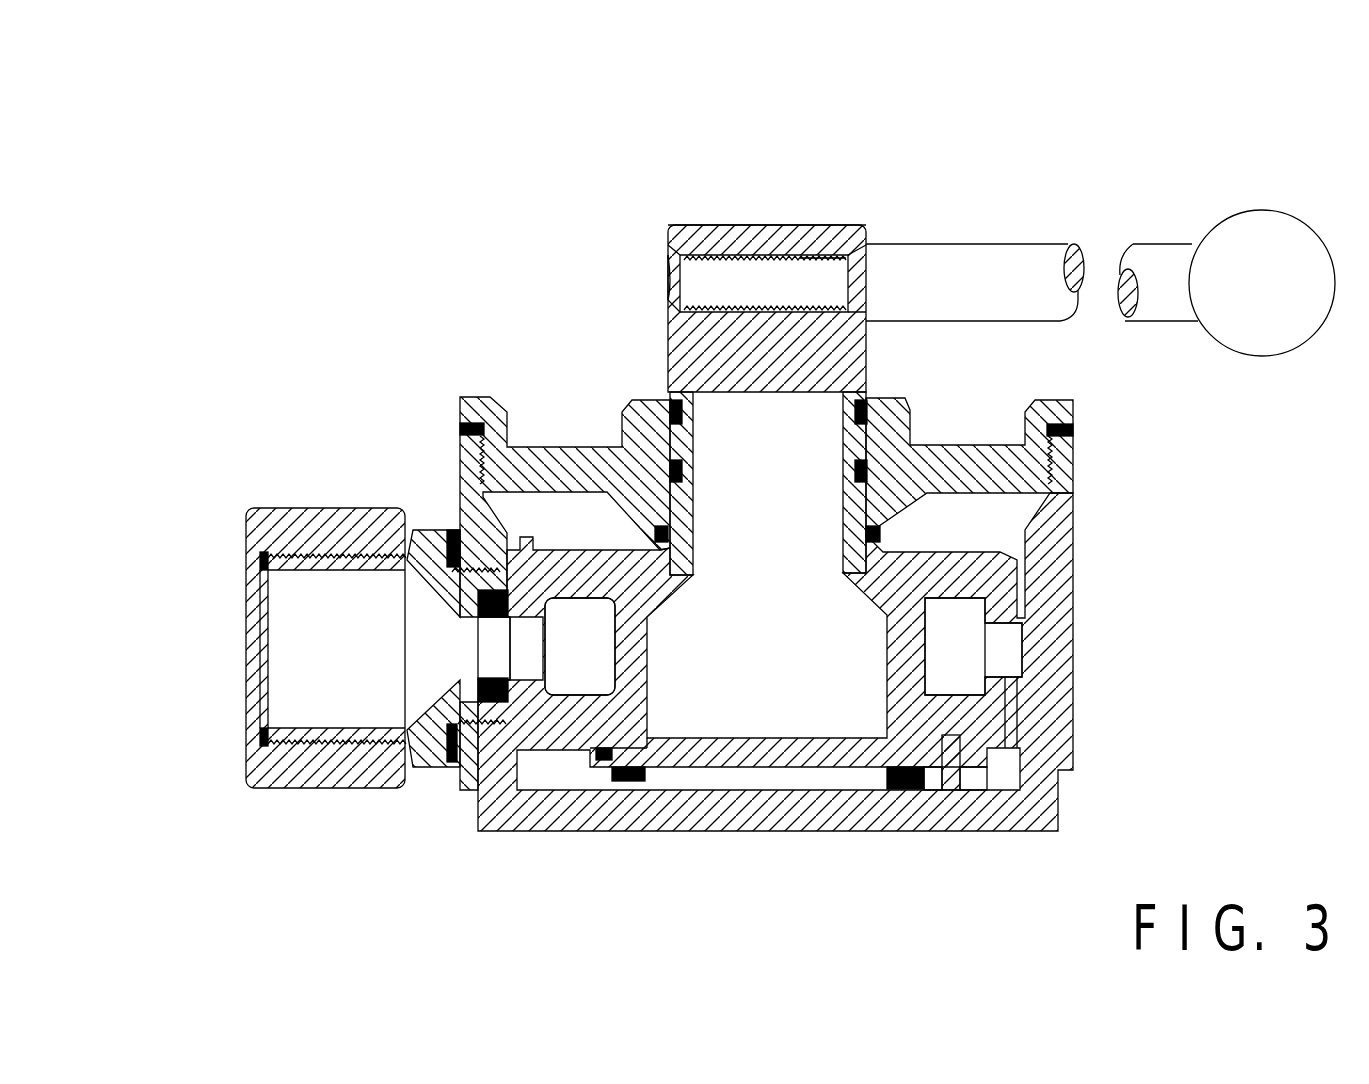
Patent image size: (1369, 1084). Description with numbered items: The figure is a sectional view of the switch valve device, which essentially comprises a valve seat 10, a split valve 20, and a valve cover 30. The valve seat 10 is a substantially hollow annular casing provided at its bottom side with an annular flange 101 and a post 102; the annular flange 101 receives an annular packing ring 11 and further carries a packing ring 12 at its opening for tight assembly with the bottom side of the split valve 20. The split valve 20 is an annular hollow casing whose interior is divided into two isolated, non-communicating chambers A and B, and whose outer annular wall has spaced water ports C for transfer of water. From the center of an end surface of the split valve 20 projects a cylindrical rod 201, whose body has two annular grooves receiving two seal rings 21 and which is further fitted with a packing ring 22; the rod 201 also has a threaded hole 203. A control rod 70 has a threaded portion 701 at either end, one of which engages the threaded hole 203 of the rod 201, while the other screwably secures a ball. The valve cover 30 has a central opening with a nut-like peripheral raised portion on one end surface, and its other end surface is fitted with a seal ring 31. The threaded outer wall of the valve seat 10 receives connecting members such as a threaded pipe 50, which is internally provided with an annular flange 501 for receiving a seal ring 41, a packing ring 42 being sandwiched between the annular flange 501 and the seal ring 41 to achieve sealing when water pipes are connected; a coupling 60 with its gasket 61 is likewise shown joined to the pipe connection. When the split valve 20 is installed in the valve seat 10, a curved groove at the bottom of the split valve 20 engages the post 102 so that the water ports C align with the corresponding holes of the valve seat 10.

The valve seat 10 is at (1075, 745).
The annular flange 101 is at (935, 783).
The post 102 is at (980, 760).
The annular packing ring 11 is at (898, 780).
The packing ring 12 is at (600, 755).
The split valve 20 is at (708, 760).
The cylindrical rod 201 is at (757, 225).
The threaded hole 203 is at (680, 265).
The seal ring 21 is at (672, 412).
The packing ring 22 is at (876, 533).
The valve cover 30 is at (905, 410).
The seal ring 31 is at (1080, 432).
The seal ring 41 is at (510, 607).
The packing ring 42 is at (452, 535).
The threaded pipe 50 is at (412, 548).
The annular flange 501 is at (480, 612).
The coupling nut 60 is at (270, 525).
The gasket 61 is at (265, 570).
The control rod 70 is at (985, 262).
The threaded portion 701 is at (815, 262).
The chamber A is at (962, 625).
The chamber B is at (565, 630).
The water ports C is at (1003, 650).